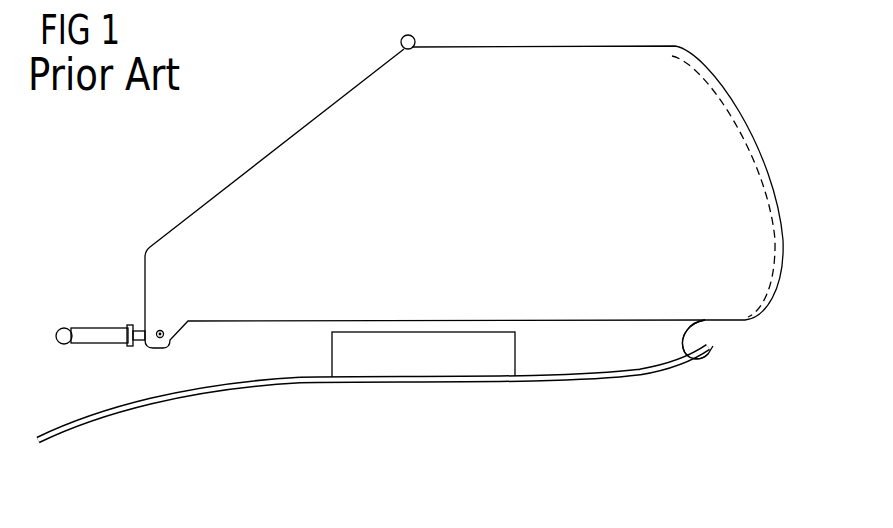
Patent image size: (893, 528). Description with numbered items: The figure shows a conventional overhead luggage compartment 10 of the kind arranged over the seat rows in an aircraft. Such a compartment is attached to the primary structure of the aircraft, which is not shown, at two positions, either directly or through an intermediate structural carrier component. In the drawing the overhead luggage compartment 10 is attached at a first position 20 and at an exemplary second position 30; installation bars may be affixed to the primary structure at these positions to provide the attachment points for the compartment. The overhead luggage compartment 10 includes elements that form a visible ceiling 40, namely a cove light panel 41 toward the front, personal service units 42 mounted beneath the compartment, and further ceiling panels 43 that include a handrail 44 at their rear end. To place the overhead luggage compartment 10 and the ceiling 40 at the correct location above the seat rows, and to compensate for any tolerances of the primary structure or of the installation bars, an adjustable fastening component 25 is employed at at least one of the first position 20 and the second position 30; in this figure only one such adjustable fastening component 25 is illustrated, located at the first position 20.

The overhead luggage compartment 10 is at (519, 204).
The first position 20 is at (60, 327).
The adjustable fastening component 25 is at (110, 333).
The second position 30 is at (400, 42).
The visible ceiling 40 is at (529, 416).
The cove light panel 41 is at (140, 400).
The personal service units 42 is at (347, 352).
The further ceiling panels 43 is at (632, 387).
The handrail 44 is at (700, 338).